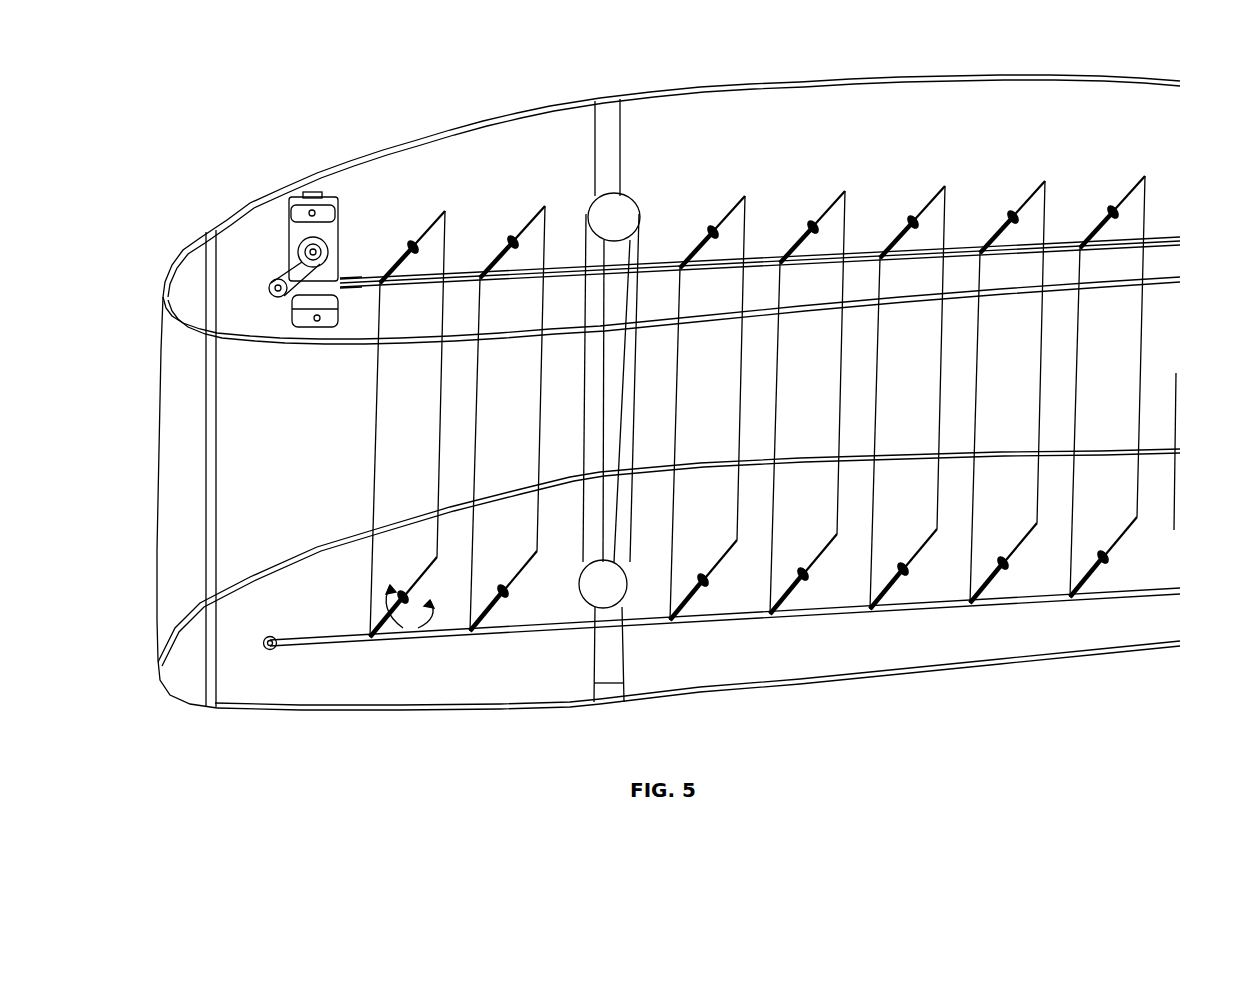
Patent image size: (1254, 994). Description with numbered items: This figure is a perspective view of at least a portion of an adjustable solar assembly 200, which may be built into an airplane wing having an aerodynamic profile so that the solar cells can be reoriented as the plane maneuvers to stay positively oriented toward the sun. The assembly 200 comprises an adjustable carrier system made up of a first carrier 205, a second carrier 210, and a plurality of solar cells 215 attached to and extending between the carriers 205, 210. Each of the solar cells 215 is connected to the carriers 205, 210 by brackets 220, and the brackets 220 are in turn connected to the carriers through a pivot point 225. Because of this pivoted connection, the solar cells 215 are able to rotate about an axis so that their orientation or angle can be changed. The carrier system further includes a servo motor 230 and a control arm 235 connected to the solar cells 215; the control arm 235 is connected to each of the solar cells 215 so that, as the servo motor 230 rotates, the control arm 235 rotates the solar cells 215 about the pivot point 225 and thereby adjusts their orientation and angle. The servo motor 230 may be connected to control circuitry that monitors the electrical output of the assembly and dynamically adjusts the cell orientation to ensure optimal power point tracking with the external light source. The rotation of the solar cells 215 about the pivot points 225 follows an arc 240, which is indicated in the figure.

The adjustable solar assembly 200 is at (322, 93).
The first carrier 205 is at (313, 677).
The second carrier 210 is at (528, 176).
The solar cells 215 is at (508, 382).
The brackets 220 is at (393, 270).
The pivot point 225 is at (513, 231).
The servo motor 230 is at (287, 218).
The control arm 235 is at (355, 284).
The arc 240 is at (420, 628).